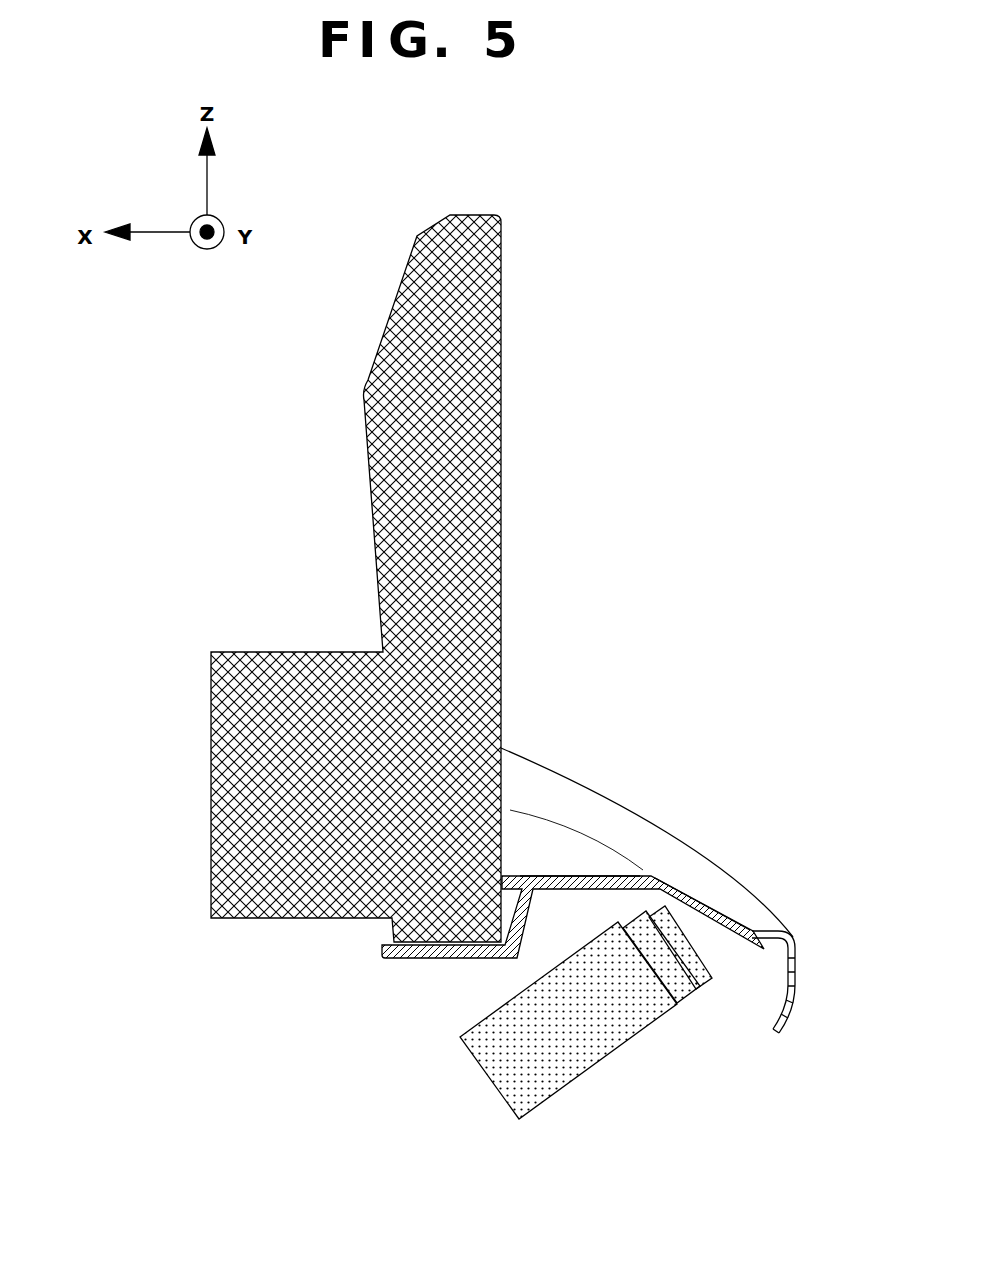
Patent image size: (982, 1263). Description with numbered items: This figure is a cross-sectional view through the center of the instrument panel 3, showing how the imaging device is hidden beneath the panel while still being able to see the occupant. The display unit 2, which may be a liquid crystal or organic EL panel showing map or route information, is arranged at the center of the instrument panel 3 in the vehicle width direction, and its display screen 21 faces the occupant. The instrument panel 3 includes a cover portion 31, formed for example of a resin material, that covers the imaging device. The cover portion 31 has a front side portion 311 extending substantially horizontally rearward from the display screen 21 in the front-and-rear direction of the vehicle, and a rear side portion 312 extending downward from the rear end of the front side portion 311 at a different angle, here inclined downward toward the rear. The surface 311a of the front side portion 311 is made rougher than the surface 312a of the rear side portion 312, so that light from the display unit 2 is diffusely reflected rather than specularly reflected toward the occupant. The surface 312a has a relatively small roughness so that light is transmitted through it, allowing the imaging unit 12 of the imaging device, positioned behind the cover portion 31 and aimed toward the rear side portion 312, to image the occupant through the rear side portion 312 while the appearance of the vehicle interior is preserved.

The display unit 2 is at (497, 214).
The display screen 21 is at (502, 443).
The instrument panel 3 is at (581, 726).
The cover portion 31 is at (650, 837).
The front side portion 311 is at (528, 828).
The surface of the front side portion 311a is at (573, 873).
The rear side portion 312 is at (742, 980).
The surface of the rear side portion 312a is at (697, 889).
The imaging unit 12 is at (563, 1088).